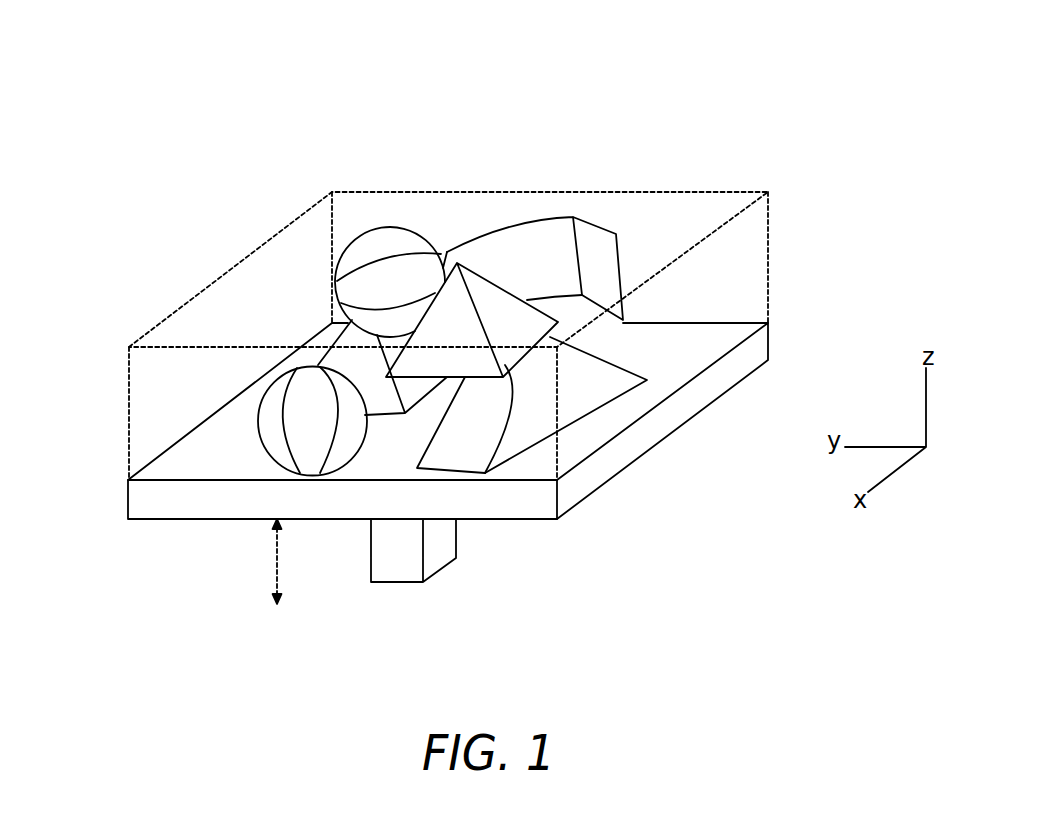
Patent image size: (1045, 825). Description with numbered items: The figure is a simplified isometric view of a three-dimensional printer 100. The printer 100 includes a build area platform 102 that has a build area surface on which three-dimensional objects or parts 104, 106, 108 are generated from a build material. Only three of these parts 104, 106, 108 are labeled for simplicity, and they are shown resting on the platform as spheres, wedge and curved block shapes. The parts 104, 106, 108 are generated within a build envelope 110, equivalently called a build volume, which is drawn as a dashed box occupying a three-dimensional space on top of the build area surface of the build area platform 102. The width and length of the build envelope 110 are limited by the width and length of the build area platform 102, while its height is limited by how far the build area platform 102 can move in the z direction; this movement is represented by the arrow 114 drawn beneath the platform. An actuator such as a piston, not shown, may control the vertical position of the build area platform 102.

The 3D printer 100 is at (180, 53).
The build area platform 102 is at (607, 481).
The part 104 is at (268, 460).
The part 106 is at (390, 415).
The part 108 is at (474, 238).
The build envelope 110 is at (375, 192).
The arrow 114 is at (278, 582).